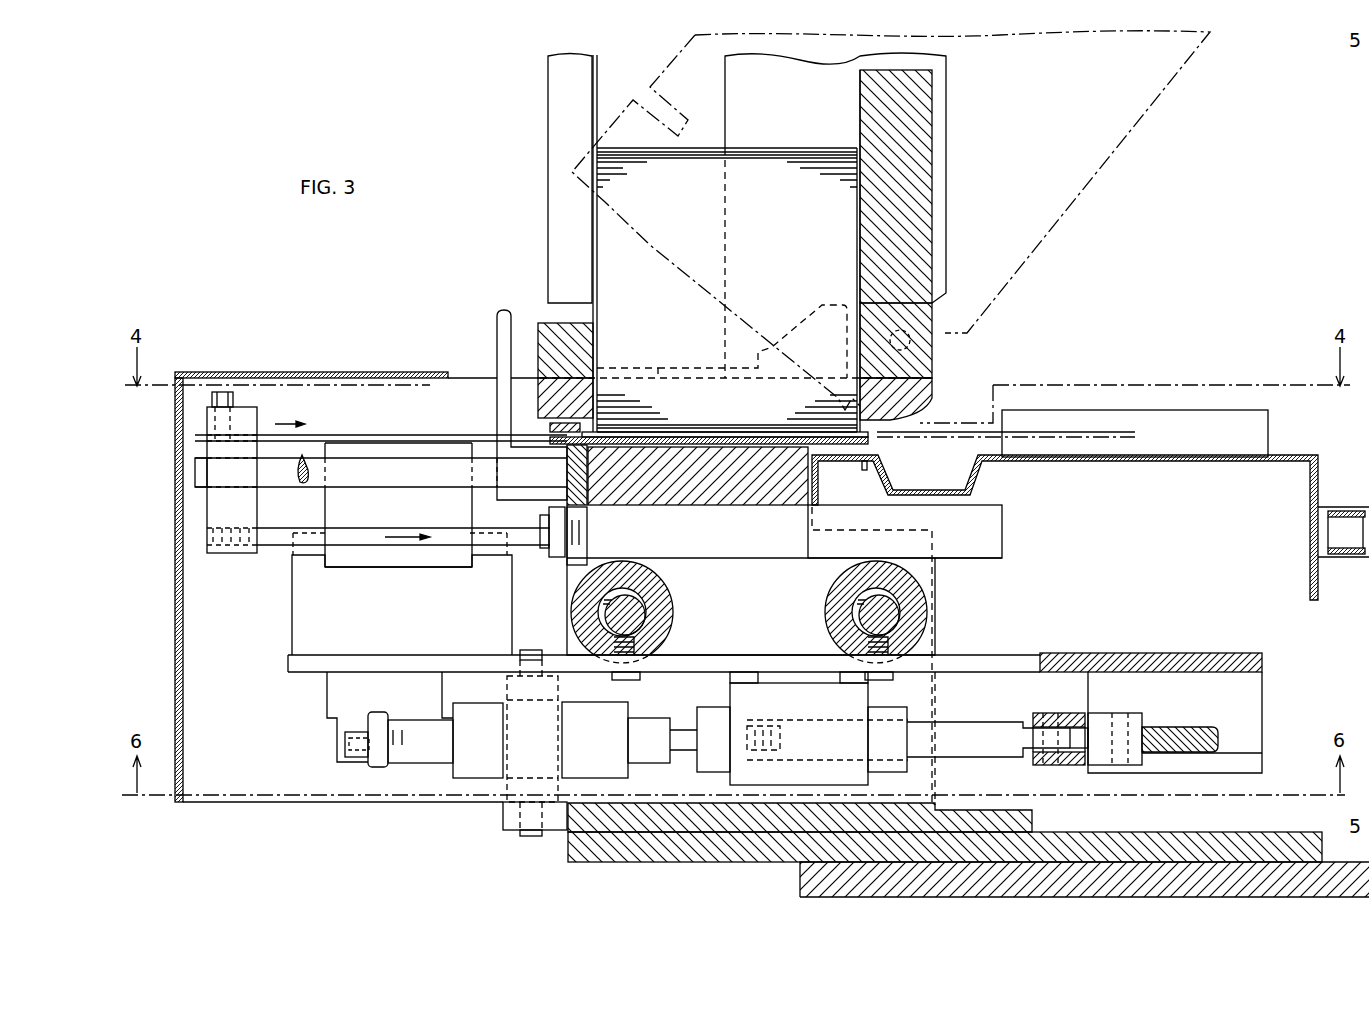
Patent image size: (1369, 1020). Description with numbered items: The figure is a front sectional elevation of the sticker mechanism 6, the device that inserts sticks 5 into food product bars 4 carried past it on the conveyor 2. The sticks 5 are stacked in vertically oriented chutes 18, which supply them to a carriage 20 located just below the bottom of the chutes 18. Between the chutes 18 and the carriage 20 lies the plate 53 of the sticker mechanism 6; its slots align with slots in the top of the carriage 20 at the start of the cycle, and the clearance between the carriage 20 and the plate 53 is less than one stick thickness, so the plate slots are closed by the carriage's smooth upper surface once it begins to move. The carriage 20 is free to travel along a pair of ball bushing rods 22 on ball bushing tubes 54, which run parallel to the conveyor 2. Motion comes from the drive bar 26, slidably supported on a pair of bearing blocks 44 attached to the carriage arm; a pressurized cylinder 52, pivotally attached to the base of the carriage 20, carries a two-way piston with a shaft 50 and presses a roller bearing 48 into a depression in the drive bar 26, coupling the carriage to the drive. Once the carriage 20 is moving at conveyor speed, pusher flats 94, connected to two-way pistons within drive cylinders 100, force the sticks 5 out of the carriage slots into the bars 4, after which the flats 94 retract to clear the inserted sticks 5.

The conveyor 2 is at (1130, 458).
The food product bars 4 is at (1270, 422).
The sticks 5 is at (916, 436).
The sticker mechanism 6 is at (392, 372).
The chutes 18 is at (548, 243).
The carriage 20 is at (936, 565).
The ball bushing rods 22 is at (637, 613).
The drive bar 26 is at (1176, 737).
The bearing blocks 44 is at (1252, 685).
The roller bearing 48 is at (1100, 738).
The shaft 50 is at (343, 747).
The pressurized cylinder 52 is at (453, 769).
The plate 53 is at (920, 399).
The ball bushing tubes 54 is at (672, 627).
The pusher flats 94 is at (416, 436).
The drive cylinders 100 is at (252, 416).